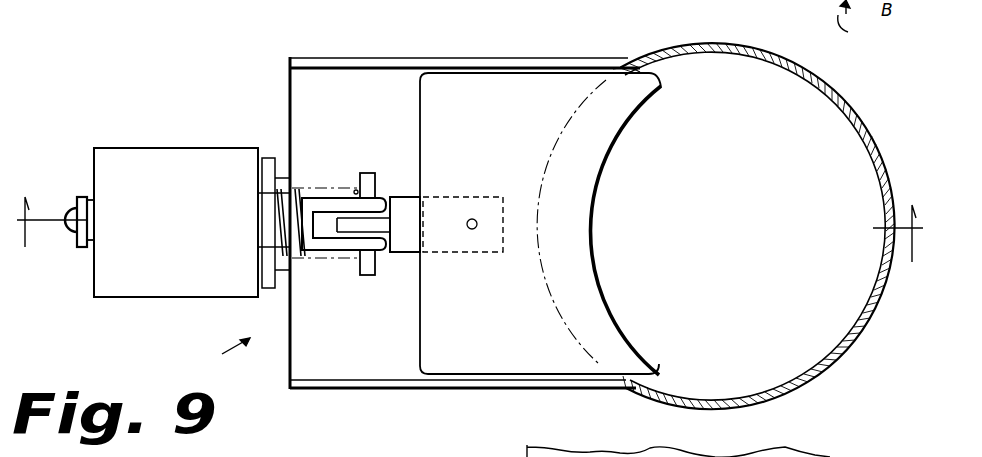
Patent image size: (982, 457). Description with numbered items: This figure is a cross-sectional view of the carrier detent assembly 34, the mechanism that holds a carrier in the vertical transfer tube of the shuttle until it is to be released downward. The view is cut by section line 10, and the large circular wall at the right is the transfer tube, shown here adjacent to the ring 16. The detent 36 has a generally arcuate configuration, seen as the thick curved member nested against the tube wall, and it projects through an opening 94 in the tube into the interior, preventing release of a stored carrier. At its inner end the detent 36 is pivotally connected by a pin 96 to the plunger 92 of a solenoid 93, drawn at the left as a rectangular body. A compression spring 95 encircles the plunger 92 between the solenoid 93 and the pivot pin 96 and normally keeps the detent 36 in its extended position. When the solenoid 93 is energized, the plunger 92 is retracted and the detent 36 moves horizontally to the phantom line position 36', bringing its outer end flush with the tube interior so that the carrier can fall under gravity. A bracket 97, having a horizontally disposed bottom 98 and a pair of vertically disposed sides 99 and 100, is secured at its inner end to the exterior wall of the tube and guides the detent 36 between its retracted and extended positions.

The section line 10- 10 is at (468, 254).
The ring 16 is at (850, 22).
The carrier detent assembly 34 is at (223, 359).
The detent 36 is at (620, 230).
The phantom line position of detent 36' is at (594, 221).
The plunger 92 is at (308, 202).
The solenoid 93 is at (177, 222).
The opening 94 is at (630, 70).
The compression spring 95 is at (283, 227).
The pin 96 is at (367, 276).
The bracket 97 is at (497, 393).
The bottom 98 is at (332, 223).
The side 99 is at (468, 63).
The side 100 is at (428, 389).